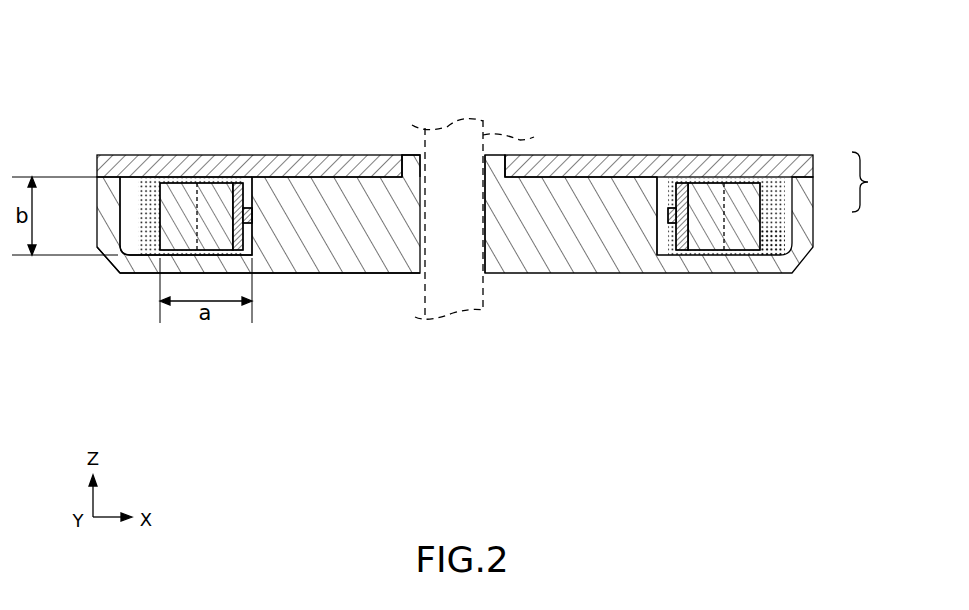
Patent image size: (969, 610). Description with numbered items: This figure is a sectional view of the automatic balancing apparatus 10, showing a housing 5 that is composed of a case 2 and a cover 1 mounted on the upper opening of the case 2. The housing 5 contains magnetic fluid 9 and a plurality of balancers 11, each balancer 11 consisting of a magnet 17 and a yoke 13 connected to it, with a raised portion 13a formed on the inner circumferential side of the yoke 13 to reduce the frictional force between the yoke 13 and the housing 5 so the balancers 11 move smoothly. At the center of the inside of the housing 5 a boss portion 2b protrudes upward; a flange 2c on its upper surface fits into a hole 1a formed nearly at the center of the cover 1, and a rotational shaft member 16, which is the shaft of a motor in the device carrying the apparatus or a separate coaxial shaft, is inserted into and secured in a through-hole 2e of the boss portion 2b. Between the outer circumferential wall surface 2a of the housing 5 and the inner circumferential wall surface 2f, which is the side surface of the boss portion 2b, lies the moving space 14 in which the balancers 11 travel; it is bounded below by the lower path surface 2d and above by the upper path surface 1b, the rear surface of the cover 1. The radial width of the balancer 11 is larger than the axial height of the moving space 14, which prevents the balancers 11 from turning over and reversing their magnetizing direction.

The cover 1 is at (808, 164).
The hole 1a is at (506, 180).
The upper path surface 1b is at (140, 185).
The case 2 is at (800, 195).
The outer circumferential wall surface 2a is at (128, 225).
The boss portion 2b is at (358, 244).
The flange 2c is at (412, 157).
The lower path surface 2d is at (135, 258).
The through-hole 2e is at (484, 257).
The inner circumferential wall surface 2f is at (657, 195).
The housing 5 is at (871, 182).
The magnetic fluid 9 is at (147, 232).
The automatic balancing apparatus 10 is at (461, 83).
The balancer 11 is at (233, 176).
The yoke 13 is at (252, 251).
The raised portion 13a is at (250, 213).
The moving space 14 is at (768, 234).
The rotational shaft member 16 is at (486, 219).
The magnet 17 is at (185, 195).